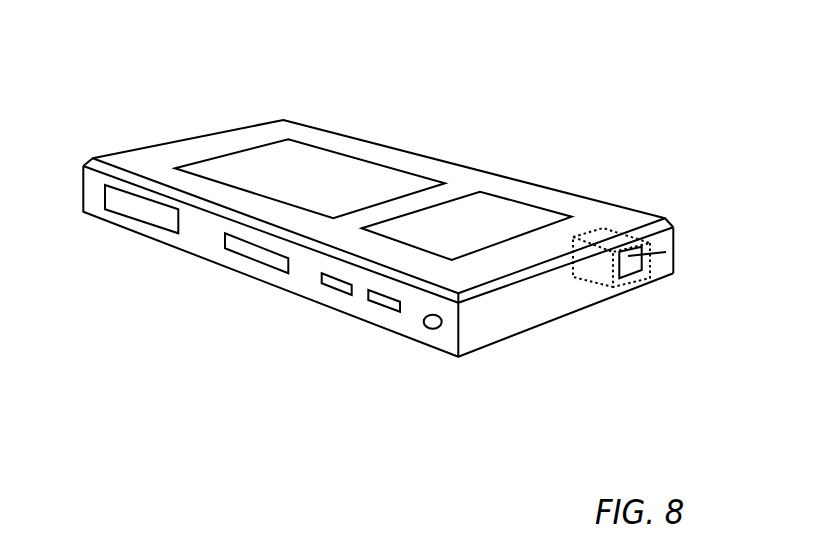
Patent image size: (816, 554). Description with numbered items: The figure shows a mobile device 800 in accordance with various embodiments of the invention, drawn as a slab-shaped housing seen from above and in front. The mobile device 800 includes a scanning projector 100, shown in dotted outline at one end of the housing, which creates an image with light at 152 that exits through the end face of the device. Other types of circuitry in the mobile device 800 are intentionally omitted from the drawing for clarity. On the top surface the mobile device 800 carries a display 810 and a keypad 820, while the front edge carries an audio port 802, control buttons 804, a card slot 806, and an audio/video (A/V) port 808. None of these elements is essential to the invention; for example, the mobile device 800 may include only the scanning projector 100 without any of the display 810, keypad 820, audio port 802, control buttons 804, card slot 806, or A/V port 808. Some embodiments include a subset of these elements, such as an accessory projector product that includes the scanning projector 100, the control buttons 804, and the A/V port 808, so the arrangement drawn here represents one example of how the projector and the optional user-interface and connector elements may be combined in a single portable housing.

The mobile device 800 is at (702, 66).
The keypad 820 is at (325, 163).
The display 810 is at (478, 205).
The audio/video (A/V) port 808 is at (125, 208).
The card slot 806 is at (247, 253).
The control buttons 804 is at (375, 303).
The audio port 802 is at (431, 329).
The scanning projector 100 is at (610, 230).
The light 152 is at (626, 258).